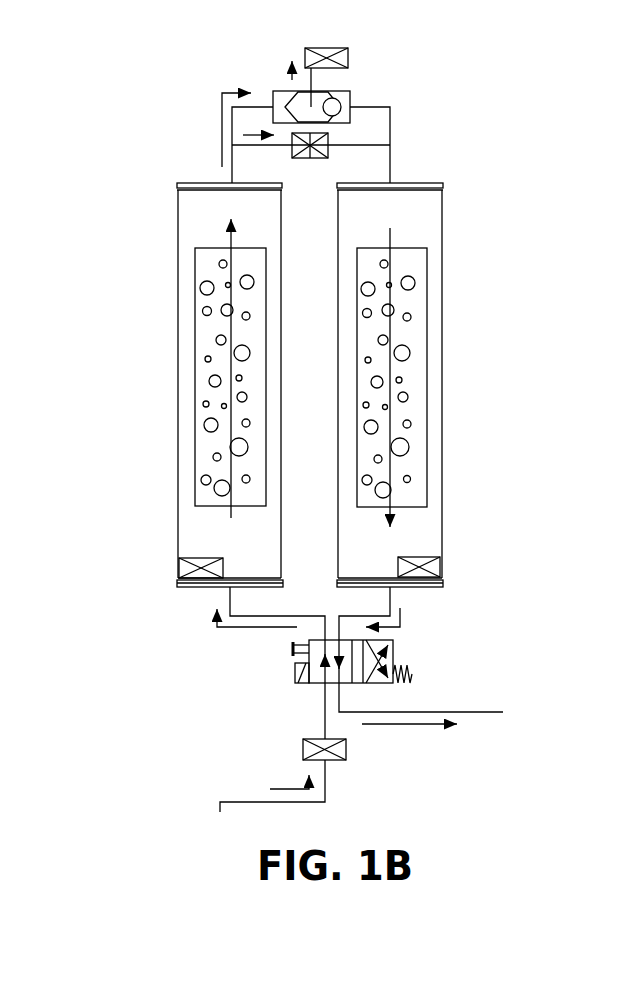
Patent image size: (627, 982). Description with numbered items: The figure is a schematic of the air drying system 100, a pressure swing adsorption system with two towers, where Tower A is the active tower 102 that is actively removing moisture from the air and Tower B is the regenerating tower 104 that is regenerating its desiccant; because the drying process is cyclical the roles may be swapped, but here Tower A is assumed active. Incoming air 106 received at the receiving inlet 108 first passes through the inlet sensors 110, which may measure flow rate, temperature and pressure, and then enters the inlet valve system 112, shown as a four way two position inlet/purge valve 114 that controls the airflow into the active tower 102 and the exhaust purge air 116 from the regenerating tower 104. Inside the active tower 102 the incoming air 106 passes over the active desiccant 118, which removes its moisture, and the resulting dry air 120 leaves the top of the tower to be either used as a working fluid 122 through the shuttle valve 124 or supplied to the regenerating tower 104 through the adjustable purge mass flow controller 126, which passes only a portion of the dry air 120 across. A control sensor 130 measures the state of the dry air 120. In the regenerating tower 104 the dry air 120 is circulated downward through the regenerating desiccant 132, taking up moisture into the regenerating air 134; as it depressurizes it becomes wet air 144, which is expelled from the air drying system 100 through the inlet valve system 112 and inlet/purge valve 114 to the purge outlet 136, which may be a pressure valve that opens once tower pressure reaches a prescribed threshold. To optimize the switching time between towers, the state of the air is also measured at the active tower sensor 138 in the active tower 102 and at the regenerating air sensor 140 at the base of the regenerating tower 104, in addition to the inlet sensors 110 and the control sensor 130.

The air drying system 100 is at (171, 90).
The active tower 102 is at (163, 385).
The regenerating tower 104 is at (448, 385).
The incoming air 106 is at (214, 620).
The receiving inlet 108 is at (220, 805).
The inlet sensors 110 is at (346, 749).
The inlet valve system 112 is at (276, 671).
The inlet/purge valve 114 is at (393, 643).
The exhaust purge air 116 is at (437, 728).
The active desiccant 118 is at (213, 489).
The dry air 120 is at (222, 117).
The working fluid 122 is at (292, 75).
The shuttle valve 124 is at (345, 102).
The adjustable purge mass flow controller 126 is at (328, 138).
The control sensor 130 is at (349, 56).
The regenerating desiccant 132 is at (389, 415).
The regenerating air 134 is at (411, 479).
The purge outlet 136 is at (488, 712).
The active tower sensor 138 is at (182, 577).
The regenerating air sensor 140 is at (440, 569).
The wet air 144 is at (400, 608).